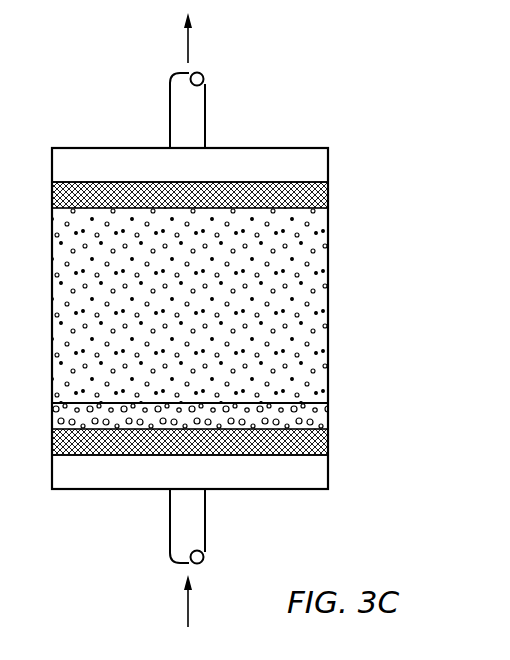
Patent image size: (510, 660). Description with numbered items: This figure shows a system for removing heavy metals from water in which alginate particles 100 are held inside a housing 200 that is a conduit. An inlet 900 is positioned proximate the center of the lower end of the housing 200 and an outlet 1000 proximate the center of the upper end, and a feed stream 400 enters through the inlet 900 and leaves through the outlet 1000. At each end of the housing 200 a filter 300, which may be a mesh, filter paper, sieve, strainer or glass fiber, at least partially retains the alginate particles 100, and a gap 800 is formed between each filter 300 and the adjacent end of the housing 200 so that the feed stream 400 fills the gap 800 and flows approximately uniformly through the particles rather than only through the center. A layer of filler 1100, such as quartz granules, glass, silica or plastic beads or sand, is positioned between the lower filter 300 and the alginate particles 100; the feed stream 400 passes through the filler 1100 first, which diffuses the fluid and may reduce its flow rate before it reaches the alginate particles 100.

The alginate particles 100 is at (316, 332).
The housing 200 is at (329, 268).
The filter 300 is at (320, 195).
The feed stream 400 is at (189, 603).
The gap 800 is at (318, 166).
The inlet 900 is at (206, 522).
The outlet 1000 is at (206, 115).
The filler 1100 is at (320, 410).